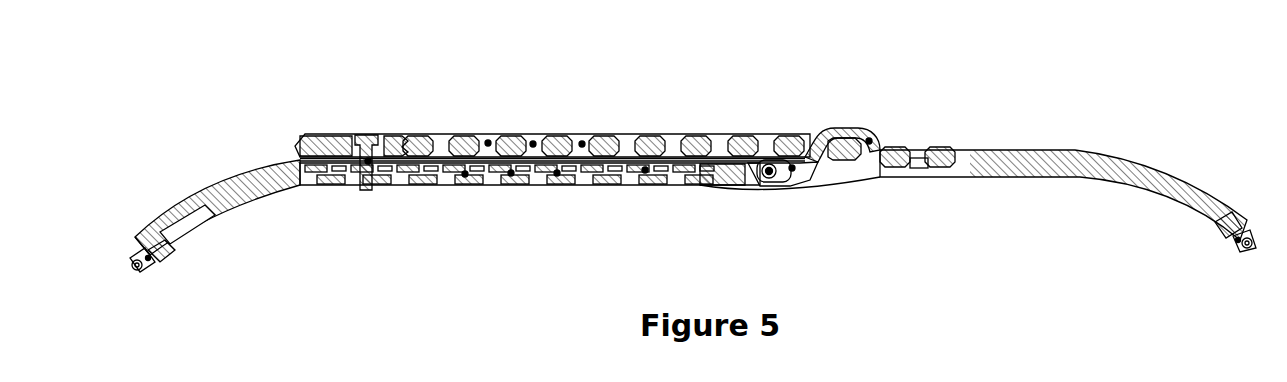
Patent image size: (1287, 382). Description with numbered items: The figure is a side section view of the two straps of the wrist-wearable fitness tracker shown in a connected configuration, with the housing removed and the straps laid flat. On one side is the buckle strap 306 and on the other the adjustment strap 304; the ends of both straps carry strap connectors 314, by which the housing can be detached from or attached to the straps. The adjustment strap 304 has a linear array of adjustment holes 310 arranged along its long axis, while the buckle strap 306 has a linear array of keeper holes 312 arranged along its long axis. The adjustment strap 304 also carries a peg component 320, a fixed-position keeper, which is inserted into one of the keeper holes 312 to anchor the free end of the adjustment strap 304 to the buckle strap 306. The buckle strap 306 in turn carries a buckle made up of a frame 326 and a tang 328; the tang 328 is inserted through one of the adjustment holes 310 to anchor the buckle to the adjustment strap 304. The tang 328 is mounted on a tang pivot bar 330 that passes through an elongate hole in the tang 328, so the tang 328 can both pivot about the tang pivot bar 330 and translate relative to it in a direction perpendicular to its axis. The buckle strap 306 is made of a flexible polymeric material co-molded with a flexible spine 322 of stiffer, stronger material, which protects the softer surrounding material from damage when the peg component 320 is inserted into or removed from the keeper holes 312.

The adjustment strap 304 is at (1092, 146).
The buckle strap 306 is at (220, 178).
The adjustment holes 310 is at (582, 144).
The keeper holes 312 is at (557, 175).
The strap connectors 314 is at (148, 261).
The peg component 320 is at (366, 163).
The flexible spine 322 is at (655, 172).
The frame 326 is at (870, 139).
The tang 328 is at (794, 170).
The tang pivot bar 330 is at (771, 177).